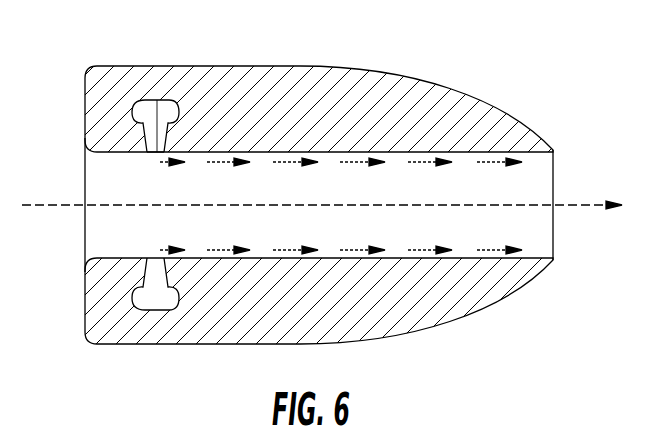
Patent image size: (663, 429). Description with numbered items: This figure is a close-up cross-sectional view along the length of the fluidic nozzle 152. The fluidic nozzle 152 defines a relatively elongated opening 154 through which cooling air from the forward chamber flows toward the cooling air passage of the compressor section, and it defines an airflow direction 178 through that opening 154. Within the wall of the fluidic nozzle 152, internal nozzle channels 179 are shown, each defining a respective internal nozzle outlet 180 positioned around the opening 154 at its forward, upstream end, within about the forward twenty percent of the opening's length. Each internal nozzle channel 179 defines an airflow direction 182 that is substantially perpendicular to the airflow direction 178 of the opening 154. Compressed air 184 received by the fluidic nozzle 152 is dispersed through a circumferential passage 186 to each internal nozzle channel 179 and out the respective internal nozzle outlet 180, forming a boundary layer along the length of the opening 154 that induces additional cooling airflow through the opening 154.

The fluidic nozzle 152 is at (353, 88).
The opening 154 is at (102, 236).
The airflow direction 178 is at (452, 205).
The internal nozzle channel 179 is at (149, 139).
The internal nozzle outlet 180 is at (151, 159).
The airflow direction 182 is at (155, 233).
The flow of compressed air 184 is at (218, 160).
The circumferential passage 186 is at (157, 100).